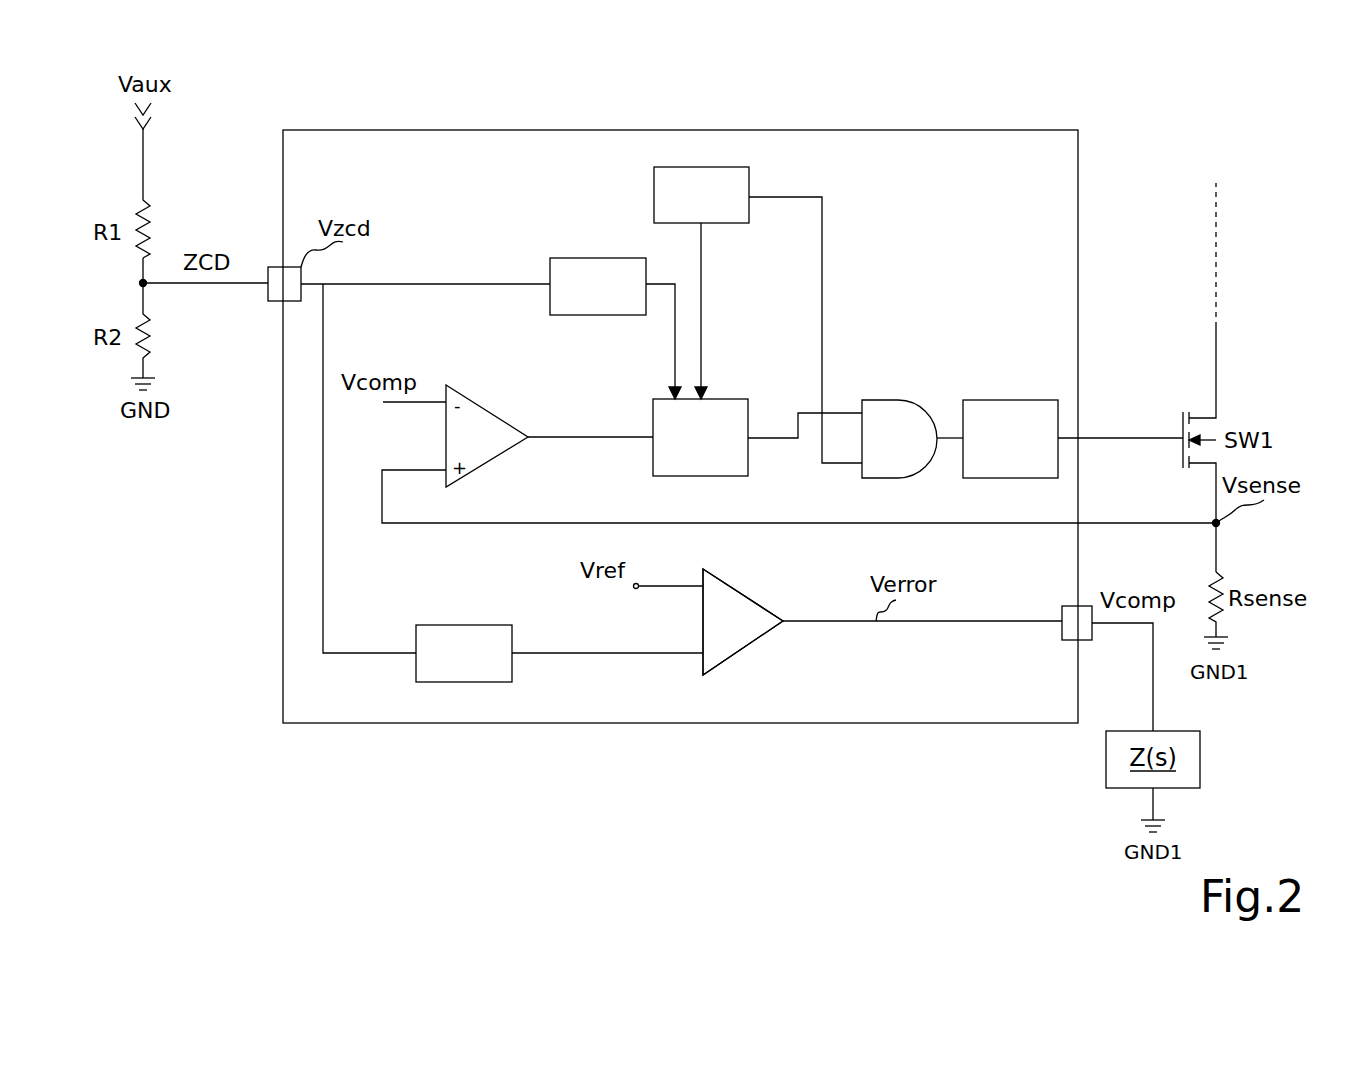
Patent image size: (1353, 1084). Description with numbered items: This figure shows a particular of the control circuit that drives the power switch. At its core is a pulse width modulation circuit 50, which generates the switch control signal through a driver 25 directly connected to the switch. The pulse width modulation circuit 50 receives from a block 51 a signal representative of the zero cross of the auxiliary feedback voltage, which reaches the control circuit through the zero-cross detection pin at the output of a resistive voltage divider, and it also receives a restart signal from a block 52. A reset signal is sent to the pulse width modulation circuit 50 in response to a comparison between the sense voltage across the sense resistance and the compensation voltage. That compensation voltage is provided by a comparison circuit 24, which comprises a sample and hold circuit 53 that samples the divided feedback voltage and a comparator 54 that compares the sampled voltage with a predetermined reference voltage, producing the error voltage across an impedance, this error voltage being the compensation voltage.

The comparison circuit 24 is at (757, 664).
The driver 25 is at (995, 451).
The pulse width modulation circuit 50 is at (685, 451).
The block 51 is at (583, 299).
The block 52 is at (686, 206).
The sample and hold circuit 53 is at (449, 666).
The comparator 54 is at (713, 635).